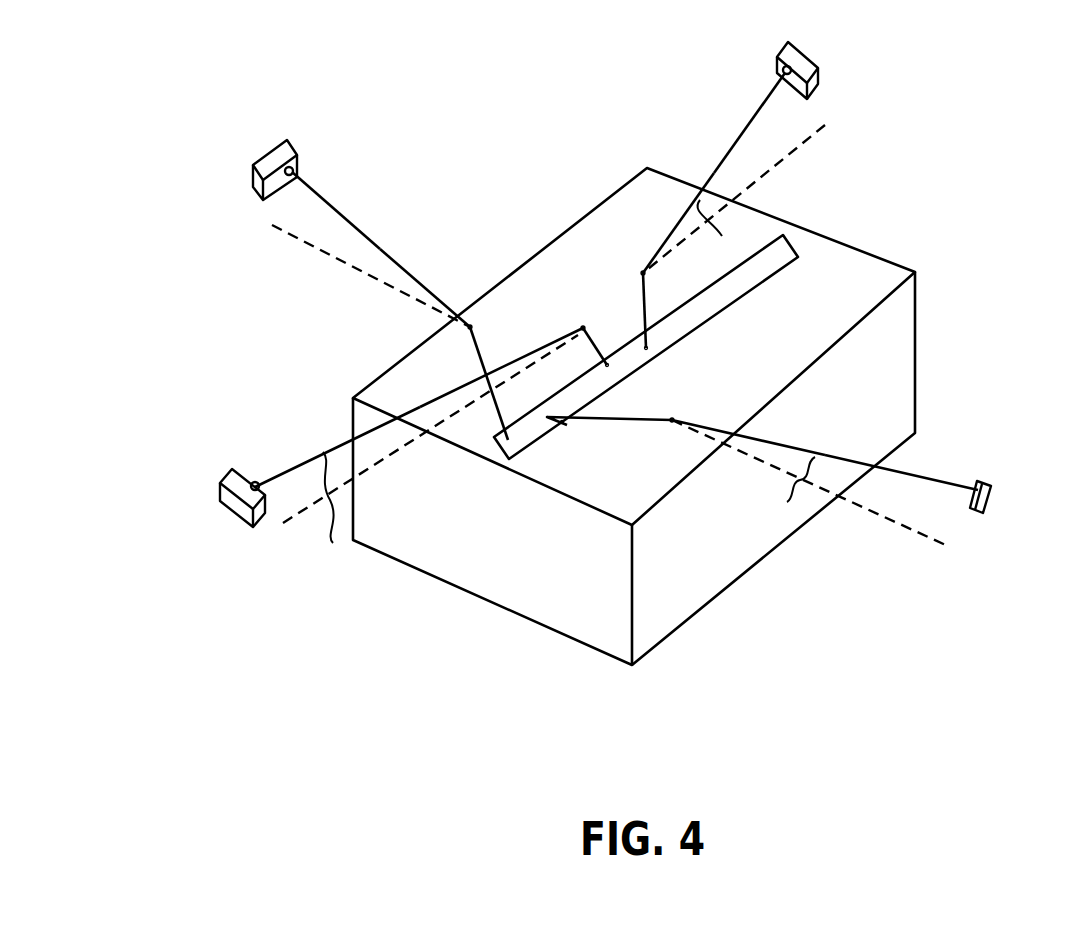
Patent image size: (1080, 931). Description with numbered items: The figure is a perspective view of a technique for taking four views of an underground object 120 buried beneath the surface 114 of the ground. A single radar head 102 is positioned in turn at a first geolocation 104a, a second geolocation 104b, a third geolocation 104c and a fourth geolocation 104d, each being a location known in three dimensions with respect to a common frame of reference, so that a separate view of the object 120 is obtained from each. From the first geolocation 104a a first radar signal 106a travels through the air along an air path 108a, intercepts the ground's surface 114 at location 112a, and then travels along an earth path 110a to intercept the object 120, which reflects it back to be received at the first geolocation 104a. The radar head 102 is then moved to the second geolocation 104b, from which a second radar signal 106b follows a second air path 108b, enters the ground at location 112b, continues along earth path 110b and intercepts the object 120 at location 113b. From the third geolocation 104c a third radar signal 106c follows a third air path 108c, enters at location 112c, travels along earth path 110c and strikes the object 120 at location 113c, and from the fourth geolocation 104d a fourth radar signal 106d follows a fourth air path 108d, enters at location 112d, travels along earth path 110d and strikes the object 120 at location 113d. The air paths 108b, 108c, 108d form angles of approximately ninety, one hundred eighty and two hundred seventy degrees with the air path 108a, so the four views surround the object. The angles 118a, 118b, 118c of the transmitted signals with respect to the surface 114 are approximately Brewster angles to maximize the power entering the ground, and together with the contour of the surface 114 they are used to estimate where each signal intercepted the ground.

The radar head 102 is at (586, 292).
The first geolocation 104a is at (299, 168).
The second geolocation 104b is at (777, 66).
The third geolocation 104c is at (983, 487).
The fourth geolocation 104d is at (247, 478).
The first radar signal 106a is at (331, 207).
The second radar signal 106b is at (748, 126).
The third radar signal 106c is at (893, 463).
The fourth radar signal 106d is at (298, 455).
The air path 108a is at (360, 306).
The second air path 108b is at (723, 156).
The third air path 108c is at (833, 455).
The fourth air path 108d is at (430, 398).
The earth path 110a is at (482, 352).
The earth path 110b is at (644, 292).
The earth path 110c is at (642, 420).
The earth path 110d is at (594, 352).
The location 112a is at (470, 327).
The location 112b is at (643, 273).
The location 112c is at (678, 400).
The location 112d is at (583, 328).
The location 113b is at (647, 350).
The location 113c is at (565, 425).
The location 113d is at (608, 366).
The surface of the ground 114 is at (308, 246).
The angle 118a is at (327, 506).
The angle 118b is at (733, 222).
The angle 118c is at (773, 487).
The object 120 is at (762, 270).